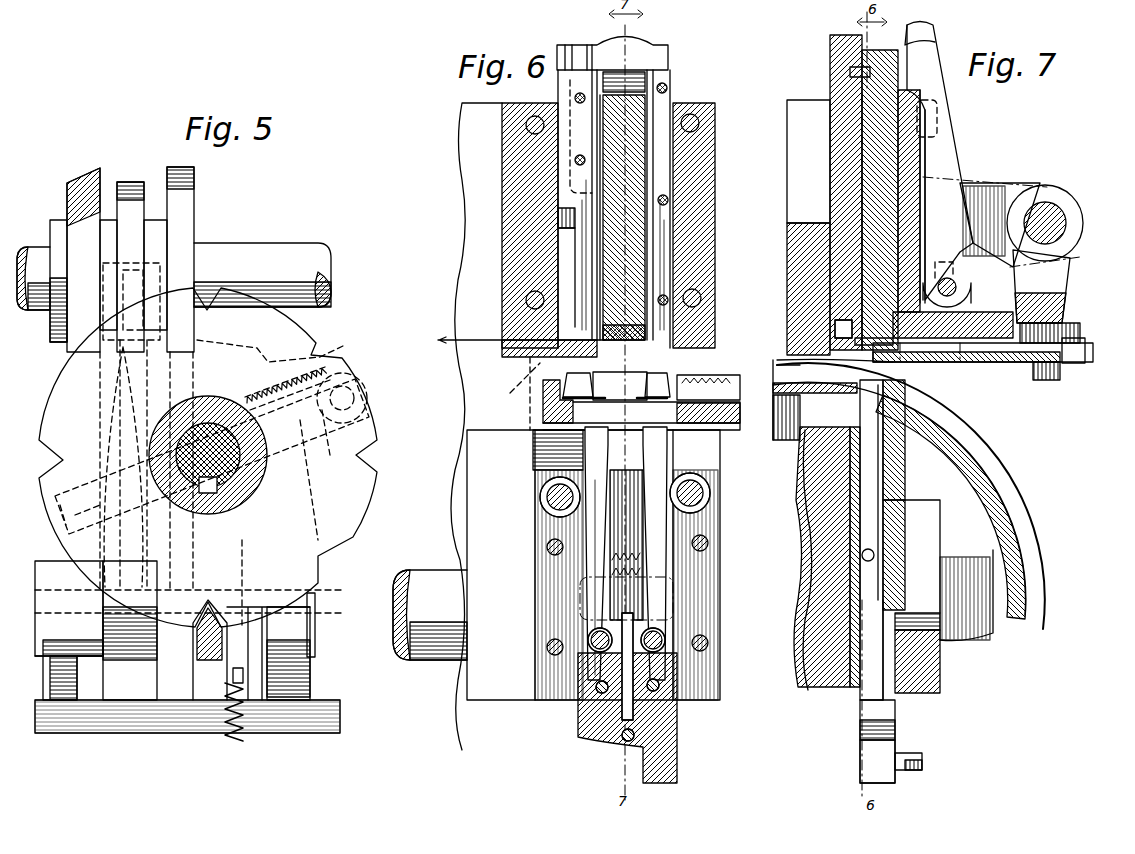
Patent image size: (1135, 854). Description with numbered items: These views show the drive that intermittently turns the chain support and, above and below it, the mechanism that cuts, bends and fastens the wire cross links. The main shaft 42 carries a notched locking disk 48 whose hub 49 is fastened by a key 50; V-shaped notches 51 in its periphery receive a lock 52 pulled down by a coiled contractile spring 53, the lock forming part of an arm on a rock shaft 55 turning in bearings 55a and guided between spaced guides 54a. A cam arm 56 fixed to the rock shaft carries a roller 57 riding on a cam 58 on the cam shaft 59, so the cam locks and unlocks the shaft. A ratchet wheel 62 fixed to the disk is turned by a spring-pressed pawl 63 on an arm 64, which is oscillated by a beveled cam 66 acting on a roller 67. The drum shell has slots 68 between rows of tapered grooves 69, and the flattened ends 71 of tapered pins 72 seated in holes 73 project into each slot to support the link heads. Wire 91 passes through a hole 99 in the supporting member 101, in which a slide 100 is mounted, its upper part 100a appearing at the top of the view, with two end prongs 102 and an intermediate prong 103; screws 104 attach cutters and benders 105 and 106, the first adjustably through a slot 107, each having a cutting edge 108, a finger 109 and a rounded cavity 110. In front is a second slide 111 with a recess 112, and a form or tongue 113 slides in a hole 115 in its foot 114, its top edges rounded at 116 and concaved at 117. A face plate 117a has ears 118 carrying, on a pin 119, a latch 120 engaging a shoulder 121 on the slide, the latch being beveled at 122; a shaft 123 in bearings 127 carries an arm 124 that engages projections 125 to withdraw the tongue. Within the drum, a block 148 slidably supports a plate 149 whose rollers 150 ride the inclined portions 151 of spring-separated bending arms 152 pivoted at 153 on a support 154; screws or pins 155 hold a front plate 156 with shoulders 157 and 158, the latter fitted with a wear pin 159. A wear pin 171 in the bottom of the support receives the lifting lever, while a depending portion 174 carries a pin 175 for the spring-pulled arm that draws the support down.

In FIG. 5, the main shaft 42 is at (196, 500).
In FIG. 6, the main shaft 42 is at (428, 662).
In FIG. 7, the main shaft 42 is at (798, 612).
In FIG. 5, the notched locking disk 48 is at (376, 492).
In FIG. 5, the hub of locking disk 49 is at (246, 490).
In FIG. 5, the key 50 is at (214, 492).
In FIG. 5, the V-shaped notches 51 is at (48, 452).
In FIG. 5, the lock 52 is at (208, 612).
In FIG. 5, the coiled contractile spring 53 is at (240, 742).
In FIG. 5, the spaced guides 54a is at (175, 678).
In FIG. 5, the rock shaft 55 is at (325, 605).
In FIG. 5, the bearings 55a is at (45, 560).
In FIG. 5, the cam arm 56 is at (157, 405).
In FIG. 5, the roller 57 is at (128, 268).
In FIG. 5, the cam 58 is at (133, 182).
In FIG. 5, the cam shaft 59 is at (262, 260).
In FIG. 5, the ratchet wheel 62 is at (226, 360).
In FIG. 5, the spring-pressed pawl 63 is at (300, 368).
In FIG. 5, the arm 64 is at (367, 393).
In FIG. 5, the cam 66 is at (88, 178).
In FIG. 5, the roller 67 is at (95, 528).
In FIG. 6, the slots 68 is at (641, 405).
In FIG. 7, the slots 68 is at (1000, 560).
In FIG. 6, the tapered grooves 69 is at (587, 362).
In FIG. 7, the flattened ends 71 is at (1013, 560).
In FIG. 7, the tapered pins 72 is at (1010, 490).
In FIG. 7, the holes 73 is at (982, 458).
In FIG. 6, the wire 91 is at (517, 332).
In FIG. 6, the hole 99 is at (520, 338).
In FIG. 6, the slide 100 is at (560, 214).
In FIG. 7, the slide 100 is at (790, 185).
In FIG. 6, the cap 100a is at (650, 40).
In FIG. 7, the cap 100a is at (840, 25).
In FIG. 6, the supporting member 101 is at (502, 262).
In FIG. 7, the supporting member 101 is at (788, 272).
In FIG. 7, the end prongs 102 is at (850, 330).
In FIG. 7, the intermediate prong 103 is at (865, 349).
In FIG. 6, the screws 104 is at (578, 158).
In FIG. 6, the cutter and bender 105 is at (563, 146).
In FIG. 6, the cutter and bender 106 is at (662, 152).
In FIG. 6, the slot 107 is at (575, 173).
In FIG. 6, the cutting edge 108 is at (555, 335).
In FIG. 6, the downwardly extended finger 109 is at (722, 343).
In FIG. 6, the rounded cavity 110 is at (662, 250).
In FIG. 7, the second slide 111 is at (895, 165).
In FIG. 7, the recess 112 is at (830, 303).
In FIG. 6, the form or tongue 113 is at (627, 386).
In FIG. 7, the form or tongue 113 is at (915, 362).
In FIG. 7, the foot 114 is at (968, 365).
In FIG. 7, the hole 115 is at (968, 300).
In FIG. 6, the rounded top edges 116 is at (622, 372).
In FIG. 6, the concaved portions 117 is at (660, 362).
In FIG. 7, the face plate 117a is at (945, 195).
In FIG. 7, the ears 118 is at (1032, 185).
In FIG. 7, the pin 119 is at (947, 276).
In FIG. 7, the latch 120 is at (940, 120).
In FIG. 7, the shoulder 121 is at (925, 100).
In FIG. 7, the beveled top end 122 is at (933, 32).
In FIG. 7, the shaft 123 is at (1050, 215).
In FIG. 7, the arm 124 is at (1065, 280).
In FIG. 7, the projections 125 is at (1088, 362).
In FIG. 7, the bearings 127 is at (1083, 222).
In FIG. 6, the block 148 is at (766, 527).
In FIG. 7, the block 148 is at (805, 525).
In FIG. 6, the plate 149 is at (720, 515).
In FIG. 7, the plate 149 is at (758, 504).
In FIG. 6, the rollers 150 is at (540, 495).
In FIG. 6, the inclined portions 151 is at (640, 508).
In FIG. 6, the bending arms 152 is at (645, 553).
In FIG. 7, the bending arms 152 is at (860, 556).
In FIG. 6, the pivot 153 is at (600, 628).
In FIG. 6, the support 154 is at (677, 715).
In FIG. 6, the screws or pins 155 is at (547, 547).
In FIG. 7, the screws or pins 155 is at (758, 615).
In FIG. 7, the front plate 156 is at (905, 548).
In FIG. 7, the top shoulder 157 is at (930, 520).
In FIG. 7, the bottom shoulder 158 is at (940, 655).
In FIG. 7, the wear pin 159 is at (960, 595).
In FIG. 6, the wear pin 171 is at (623, 741).
In FIG. 7, the wear pin 171 is at (860, 731).
In FIG. 6, the depending portion 174 is at (677, 757).
In FIG. 7, the depending portion 174 is at (860, 762).
In FIG. 7, the outstanding pin 175 is at (912, 750).